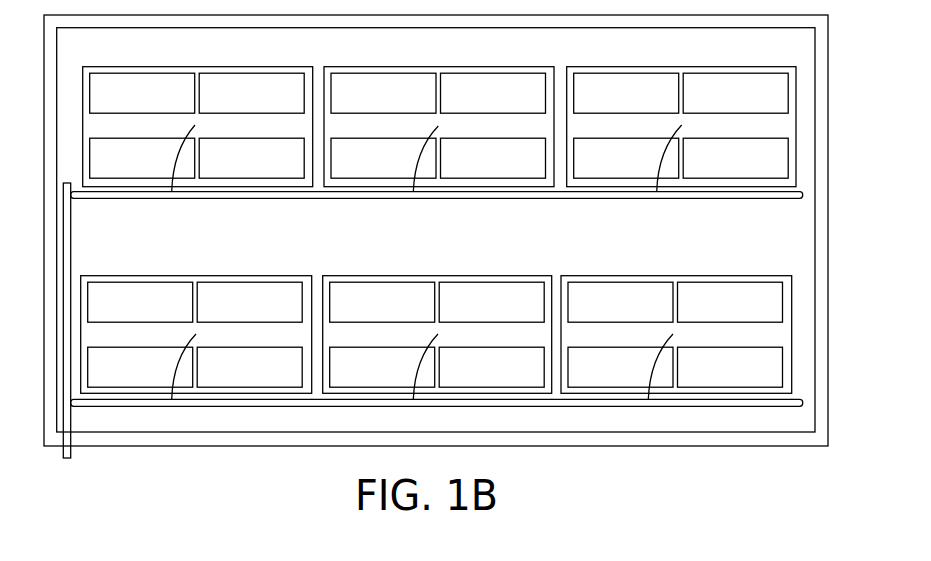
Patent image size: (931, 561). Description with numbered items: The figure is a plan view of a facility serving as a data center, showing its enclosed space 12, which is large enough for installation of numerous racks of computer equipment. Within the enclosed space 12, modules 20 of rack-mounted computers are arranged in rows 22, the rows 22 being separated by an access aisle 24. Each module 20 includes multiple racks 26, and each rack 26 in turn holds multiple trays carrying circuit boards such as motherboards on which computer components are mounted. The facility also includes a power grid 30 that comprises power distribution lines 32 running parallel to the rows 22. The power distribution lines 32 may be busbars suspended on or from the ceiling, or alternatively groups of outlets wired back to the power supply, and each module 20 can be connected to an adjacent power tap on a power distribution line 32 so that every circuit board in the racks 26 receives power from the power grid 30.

The enclosed space 12 is at (125, 248).
The module 20 is at (190, 67).
The row 22 is at (803, 130).
The access aisle 24 is at (797, 233).
The rack 26 is at (438, 230).
The power grid 30 is at (607, 199).
The power distribution line 32 is at (237, 198).